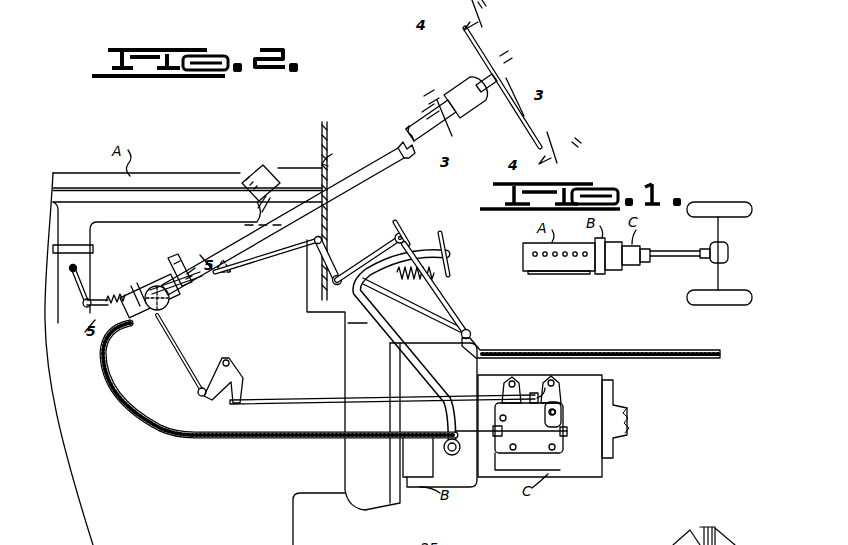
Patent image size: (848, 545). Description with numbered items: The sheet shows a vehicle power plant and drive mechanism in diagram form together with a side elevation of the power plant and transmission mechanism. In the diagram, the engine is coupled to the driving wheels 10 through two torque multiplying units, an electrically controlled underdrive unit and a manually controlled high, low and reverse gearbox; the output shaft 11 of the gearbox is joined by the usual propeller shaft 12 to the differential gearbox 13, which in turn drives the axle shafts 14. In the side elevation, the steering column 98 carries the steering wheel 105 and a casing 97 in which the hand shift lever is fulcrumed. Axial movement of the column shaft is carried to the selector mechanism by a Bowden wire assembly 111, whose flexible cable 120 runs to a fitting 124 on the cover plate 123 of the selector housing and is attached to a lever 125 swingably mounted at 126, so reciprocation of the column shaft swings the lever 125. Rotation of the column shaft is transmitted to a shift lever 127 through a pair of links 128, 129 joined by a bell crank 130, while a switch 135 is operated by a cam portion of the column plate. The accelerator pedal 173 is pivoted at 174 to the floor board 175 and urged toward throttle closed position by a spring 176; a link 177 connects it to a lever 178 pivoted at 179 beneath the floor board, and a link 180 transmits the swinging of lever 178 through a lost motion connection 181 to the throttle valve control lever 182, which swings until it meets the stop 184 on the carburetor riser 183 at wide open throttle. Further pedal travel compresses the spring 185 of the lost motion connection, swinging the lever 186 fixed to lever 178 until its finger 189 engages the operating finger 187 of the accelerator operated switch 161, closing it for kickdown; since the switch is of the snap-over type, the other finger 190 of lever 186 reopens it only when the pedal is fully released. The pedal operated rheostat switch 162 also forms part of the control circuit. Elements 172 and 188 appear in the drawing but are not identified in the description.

In FIG. 1, the driving wheels 10 is at (738, 202).
In FIG. 1, the output shaft 11 is at (658, 250).
In FIG. 1, the propeller shaft 12 is at (702, 248).
In FIG. 1, the differential gearbox 13 is at (730, 252).
In FIG. 1, the axle shafts 14 is at (728, 286).
In FIG. 2, the casing 97 is at (454, 94).
In FIG. 2, the steering column 98 is at (384, 150).
In FIG. 2, the steering wheel 105 is at (528, 119).
In FIG. 2, the Bowden wire assembly 111 is at (154, 432).
In FIG. 2, the flexible cable 120 is at (511, 428).
In FIG. 2, the cover plate 123 is at (538, 452).
In FIG. 2, the fitting 124 is at (458, 455).
In FIG. 2, the lever 125 is at (560, 418).
In FIG. 2, the pivot mounting 126 is at (564, 392).
In FIG. 2, the shift lever 127 is at (558, 376).
In FIG. 2, the link 128 is at (190, 340).
In FIG. 2, the link 129 is at (320, 396).
In FIG. 2, the bell crank 130 is at (254, 368).
In FIG. 2, the switch 135 is at (156, 311).
In FIG. 2, the accelerator operated switch 161 is at (262, 165).
In FIG. 2, the pedal operated rheostat switch 162 is at (402, 454).
In FIG. 2, the hand lever 172 is at (448, 238).
In FIG. 2, the accelerator pedal 173 is at (406, 224).
In FIG. 2, the pivot 174 is at (472, 332).
In FIG. 2, the vehicle floor board 175 is at (498, 346).
In FIG. 2, the spring 176 is at (438, 283).
In FIG. 2, the link 177 is at (388, 254).
In FIG. 2, the lever 178 is at (320, 286).
In FIG. 2, the pivot 179 is at (330, 229).
In FIG. 2, the link 180 is at (208, 290).
In FIG. 2, the lost motion connection 181 is at (122, 281).
In FIG. 2, the throttle valve control lever 182 is at (102, 277).
In FIG. 2, the carburetor riser 183 is at (70, 322).
In FIG. 2, the stop 184 is at (58, 306).
In FIG. 2, the spring 185 is at (168, 267).
In FIG. 2, the lever 186 is at (266, 256).
In FIG. 2, the operating finger 187 is at (246, 206).
In FIG. 2, the plate 188 is at (321, 141).
In FIG. 2, the finger 189 is at (232, 258).
In FIG. 2, the finger 190 is at (324, 158).